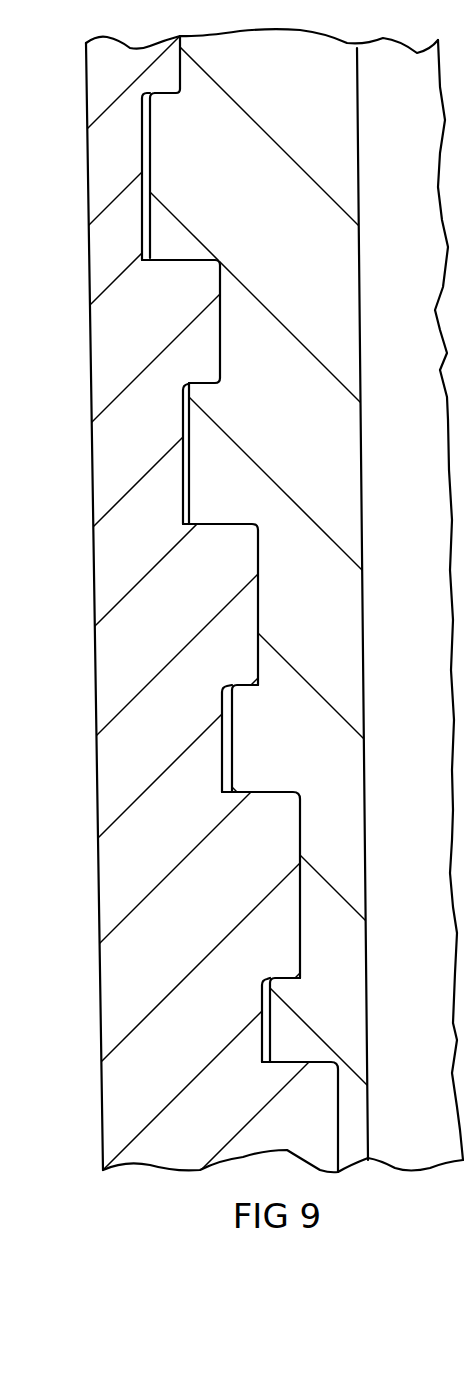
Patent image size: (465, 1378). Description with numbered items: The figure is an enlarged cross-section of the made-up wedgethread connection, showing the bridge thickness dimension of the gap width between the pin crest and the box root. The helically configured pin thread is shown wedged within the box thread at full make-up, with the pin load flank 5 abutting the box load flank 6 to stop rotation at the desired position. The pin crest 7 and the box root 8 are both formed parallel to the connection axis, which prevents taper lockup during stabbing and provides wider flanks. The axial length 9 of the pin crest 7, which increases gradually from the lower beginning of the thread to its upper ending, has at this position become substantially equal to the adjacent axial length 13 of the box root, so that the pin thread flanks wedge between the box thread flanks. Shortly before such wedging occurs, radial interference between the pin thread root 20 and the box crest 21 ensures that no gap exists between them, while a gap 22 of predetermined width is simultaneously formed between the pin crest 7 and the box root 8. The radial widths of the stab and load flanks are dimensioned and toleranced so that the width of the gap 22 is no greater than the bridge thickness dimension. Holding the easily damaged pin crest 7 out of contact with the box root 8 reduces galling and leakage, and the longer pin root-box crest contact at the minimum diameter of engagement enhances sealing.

The pin load flank 5 is at (262, 1023).
The box load flank 6 is at (262, 1023).
The pin crest 7 is at (147, 174).
The box root 8 is at (152, 212).
The axial length of pin thread crest 9 is at (232, 755).
The axial length of box root 13 is at (233, 772).
The pin thread root 20 is at (258, 623).
The box crest 21 is at (258, 663).
The gap 22 is at (183, 428).